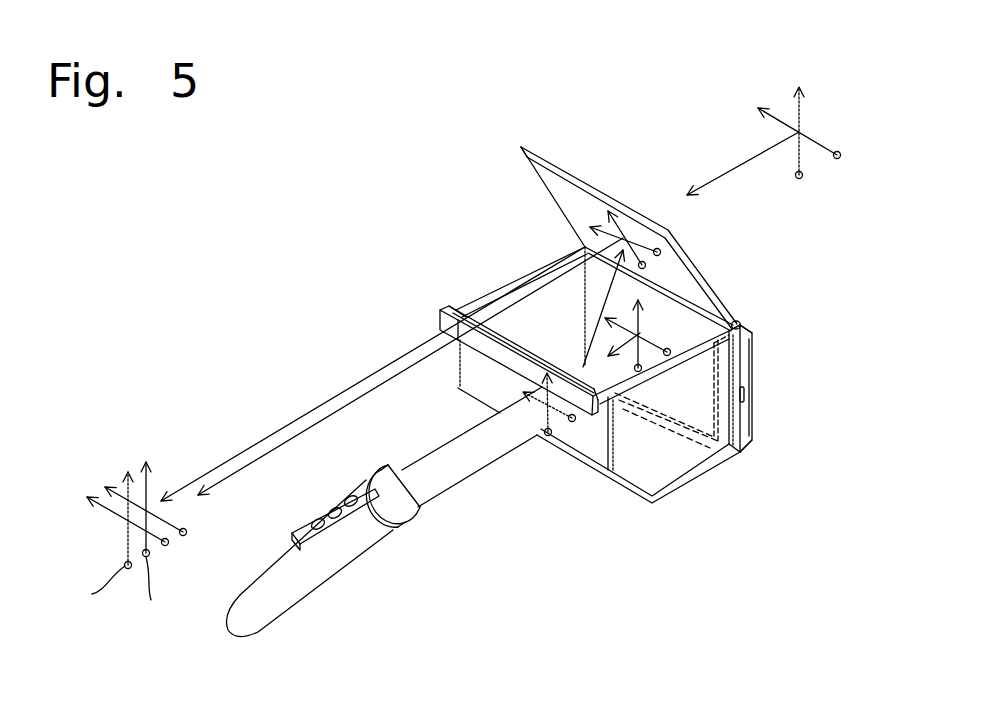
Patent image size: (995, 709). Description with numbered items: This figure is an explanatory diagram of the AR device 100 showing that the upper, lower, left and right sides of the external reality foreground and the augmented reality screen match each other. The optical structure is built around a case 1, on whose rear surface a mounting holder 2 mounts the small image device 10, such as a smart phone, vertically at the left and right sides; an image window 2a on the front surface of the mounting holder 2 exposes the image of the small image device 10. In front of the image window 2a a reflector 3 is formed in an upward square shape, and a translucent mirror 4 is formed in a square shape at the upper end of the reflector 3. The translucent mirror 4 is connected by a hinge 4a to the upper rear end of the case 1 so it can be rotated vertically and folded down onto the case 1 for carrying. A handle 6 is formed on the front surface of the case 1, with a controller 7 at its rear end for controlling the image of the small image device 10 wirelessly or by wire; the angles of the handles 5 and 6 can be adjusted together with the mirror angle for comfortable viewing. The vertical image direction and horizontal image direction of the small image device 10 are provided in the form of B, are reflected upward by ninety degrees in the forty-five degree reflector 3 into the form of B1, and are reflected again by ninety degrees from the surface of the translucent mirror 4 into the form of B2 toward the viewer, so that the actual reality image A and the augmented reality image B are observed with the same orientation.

The AR device 100 is at (625, 172).
The case 1 is at (478, 385).
The mounting holder 2 is at (752, 410).
The image window 2a is at (736, 324).
The reflector 3 is at (670, 430).
The translucent mirror 4 is at (544, 166).
The hinge 4a is at (743, 330).
The handle 5 is at (447, 478).
The handle 6 is at (335, 568).
The controller 7 is at (307, 528).
The small image device 10 is at (743, 370).
The actual reality image A is at (803, 132).
The augmented reality image B is at (660, 322).
The reflected image form B1 is at (545, 433).
The reflected image form B2 is at (613, 245).